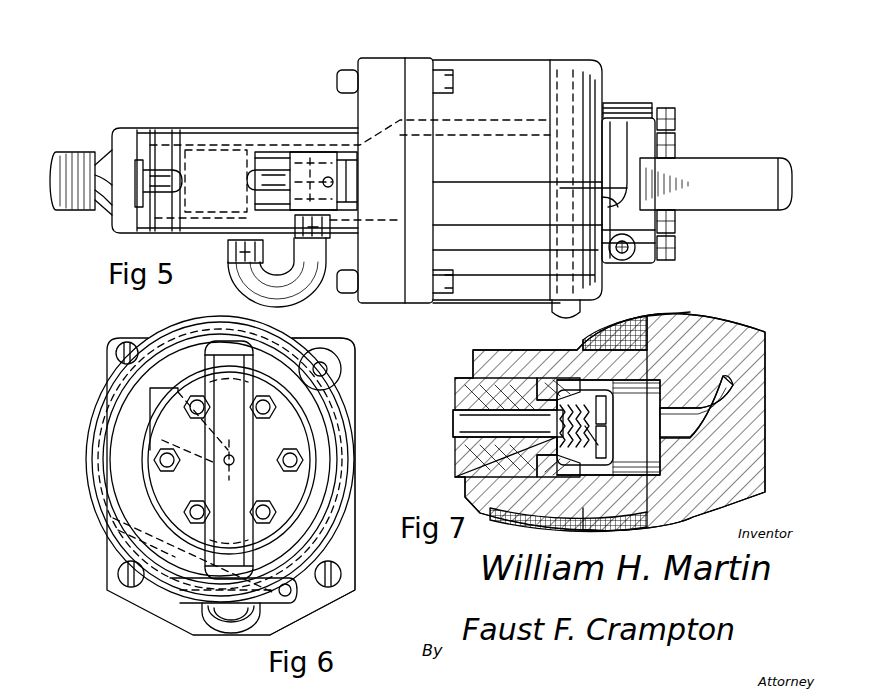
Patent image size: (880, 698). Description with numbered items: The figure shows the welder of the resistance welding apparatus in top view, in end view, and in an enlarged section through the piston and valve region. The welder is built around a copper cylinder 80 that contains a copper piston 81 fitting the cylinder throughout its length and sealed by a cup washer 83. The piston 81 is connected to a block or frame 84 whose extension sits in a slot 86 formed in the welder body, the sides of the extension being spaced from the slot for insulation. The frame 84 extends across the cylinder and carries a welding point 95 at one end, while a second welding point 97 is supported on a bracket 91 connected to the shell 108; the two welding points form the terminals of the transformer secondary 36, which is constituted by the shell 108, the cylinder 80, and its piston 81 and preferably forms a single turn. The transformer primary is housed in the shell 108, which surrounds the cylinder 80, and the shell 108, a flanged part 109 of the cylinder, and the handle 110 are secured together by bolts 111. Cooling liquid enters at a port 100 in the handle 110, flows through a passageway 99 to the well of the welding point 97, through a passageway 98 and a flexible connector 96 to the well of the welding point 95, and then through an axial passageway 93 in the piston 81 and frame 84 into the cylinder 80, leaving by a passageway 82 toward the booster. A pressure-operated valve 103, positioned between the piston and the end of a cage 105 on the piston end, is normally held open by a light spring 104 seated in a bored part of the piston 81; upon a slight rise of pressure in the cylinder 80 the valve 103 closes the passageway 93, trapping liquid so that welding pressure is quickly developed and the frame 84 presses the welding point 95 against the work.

In FIG. 7, the secondary of the transformer 36 is at (669, 339).
In FIG. 7, the cylinder 80 is at (621, 360).
In FIG. 7, the piston 81 is at (496, 402).
In FIG. 5, the passageway 82 is at (627, 256).
In FIG. 6, the passageway 82 is at (168, 390).
In FIG. 7, the passageway 82 is at (732, 398).
In FIG. 7, the cup washer 83 is at (556, 386).
In FIG. 5, the frame 84 is at (328, 172).
In FIG. 5, the slot 86 is at (273, 158).
In FIG. 5, the welding point-supporting bracket 91 is at (226, 168).
In FIG. 7, the passageway 93 is at (477, 432).
In FIG. 5, the welding point 95 is at (250, 184).
In FIG. 5, the flexible connector 96 is at (244, 285).
In FIG. 5, the welding point 97 is at (182, 182).
In FIG. 5, the passageway 98 is at (133, 232).
In FIG. 5, the passageway 99 is at (188, 139).
In FIG. 6, the passageway 99 is at (87, 471).
In FIG. 5, the port 100 is at (609, 100).
In FIG. 6, the port 100 is at (330, 368).
In FIG. 7, the pressure-operated valve 103 is at (606, 423).
In FIG. 7, the spring 104 is at (604, 441).
In FIG. 7, the cage 105 is at (598, 390).
In FIG. 5, the shell 108 is at (461, 84).
In FIG. 6, the shell 108 is at (330, 540).
In FIG. 5, the flanged part 109 is at (615, 120).
In FIG. 7, the flanged part 109 is at (718, 338).
In FIG. 5, the handle 110 is at (716, 178).
In FIG. 6, the handle 110 is at (232, 372).
In FIG. 5, the bolts 111 is at (677, 120).
In FIG. 6, the bolts 111 is at (190, 511).